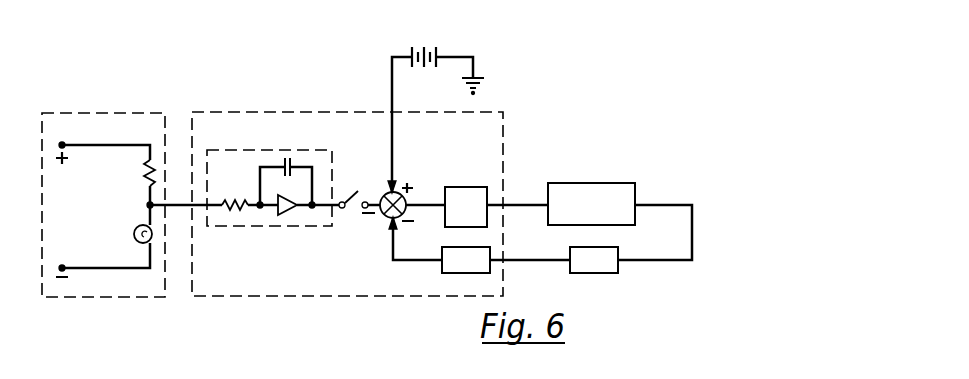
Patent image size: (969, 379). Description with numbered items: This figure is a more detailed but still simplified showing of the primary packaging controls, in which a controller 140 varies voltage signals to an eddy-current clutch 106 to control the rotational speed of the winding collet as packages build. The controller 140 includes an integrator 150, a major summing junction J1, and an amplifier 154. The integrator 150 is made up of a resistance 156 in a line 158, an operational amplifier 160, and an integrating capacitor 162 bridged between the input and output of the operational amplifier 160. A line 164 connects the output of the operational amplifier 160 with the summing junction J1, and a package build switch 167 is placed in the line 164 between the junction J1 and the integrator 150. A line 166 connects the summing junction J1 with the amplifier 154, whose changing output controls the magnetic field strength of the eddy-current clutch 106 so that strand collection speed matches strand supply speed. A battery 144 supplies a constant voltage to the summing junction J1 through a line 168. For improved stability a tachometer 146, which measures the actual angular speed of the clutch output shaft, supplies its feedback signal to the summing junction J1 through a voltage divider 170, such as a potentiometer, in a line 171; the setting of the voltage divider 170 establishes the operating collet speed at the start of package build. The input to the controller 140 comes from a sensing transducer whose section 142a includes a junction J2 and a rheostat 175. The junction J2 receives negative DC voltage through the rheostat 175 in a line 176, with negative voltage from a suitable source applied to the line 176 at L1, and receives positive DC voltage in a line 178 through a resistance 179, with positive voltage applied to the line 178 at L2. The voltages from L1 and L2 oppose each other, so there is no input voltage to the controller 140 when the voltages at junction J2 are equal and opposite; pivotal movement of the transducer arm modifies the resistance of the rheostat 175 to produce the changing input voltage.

The eddy-current clutch 106 is at (598, 183).
The controller 140 is at (225, 112).
The transducer section 142a is at (130, 113).
The battery 144 is at (420, 46).
The tachometer 146 is at (619, 258).
The integrator 150 is at (302, 150).
The amplifier 154 is at (463, 172).
The resistance 156 is at (238, 211).
The line 158 is at (173, 204).
The operational amplifier 160 is at (287, 215).
The integrating capacitor 162 is at (287, 157).
The line 164 is at (316, 208).
The line 166 is at (433, 205).
The package build switch 167 is at (357, 192).
The line 168 is at (391, 61).
The voltage divider 170 is at (443, 272).
The line 171 is at (539, 258).
The rheostat 175 is at (134, 236).
The line 176 is at (147, 216).
The line 178 is at (147, 163).
The resistance 179 is at (146, 181).
The summing junction J1 is at (399, 190).
The junction J2 is at (147, 205).
The negative voltage terminal L1 is at (58, 255).
The positive voltage terminal L2 is at (56, 135).